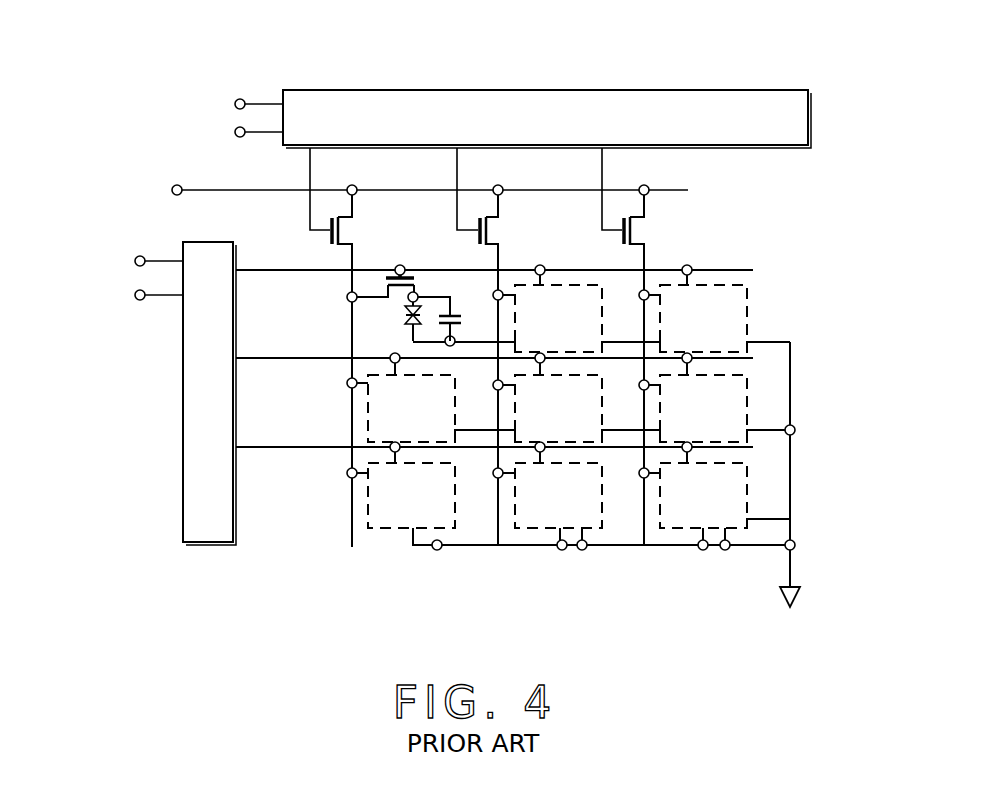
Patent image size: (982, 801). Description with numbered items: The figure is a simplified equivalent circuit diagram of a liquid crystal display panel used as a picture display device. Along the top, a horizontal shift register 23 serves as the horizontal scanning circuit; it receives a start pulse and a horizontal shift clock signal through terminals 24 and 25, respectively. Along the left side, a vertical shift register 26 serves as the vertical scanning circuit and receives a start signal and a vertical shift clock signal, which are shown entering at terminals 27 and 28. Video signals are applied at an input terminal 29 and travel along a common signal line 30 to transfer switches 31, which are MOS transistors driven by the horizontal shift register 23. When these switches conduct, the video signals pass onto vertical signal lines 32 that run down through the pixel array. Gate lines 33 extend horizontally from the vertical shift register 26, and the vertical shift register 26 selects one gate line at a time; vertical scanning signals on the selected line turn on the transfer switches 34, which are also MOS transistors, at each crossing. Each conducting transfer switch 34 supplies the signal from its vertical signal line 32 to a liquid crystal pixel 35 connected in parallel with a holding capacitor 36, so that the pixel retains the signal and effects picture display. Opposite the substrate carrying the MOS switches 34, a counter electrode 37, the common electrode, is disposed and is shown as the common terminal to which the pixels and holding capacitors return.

The horizontal shift register 23 is at (509, 89).
The terminal 24 is at (235, 101).
The terminal 25 is at (236, 136).
The vertical shift register 26 is at (202, 243).
The vertical start pulse terminal (φVST) 27 is at (136, 258).
The vertical clock terminal (φVCK) 28 is at (136, 299).
The input terminal 29 is at (182, 196).
The common signal line 30 is at (257, 188).
The transfer switches 31 is at (351, 233).
The vertical signal lines 32 is at (355, 265).
The gate line (row line) 33 is at (275, 268).
The transfer switches 34 is at (420, 279).
The liquid crystal pixels 35 is at (409, 318).
The holding capacitors 36 is at (457, 319).
The counter electrode 37 is at (795, 597).